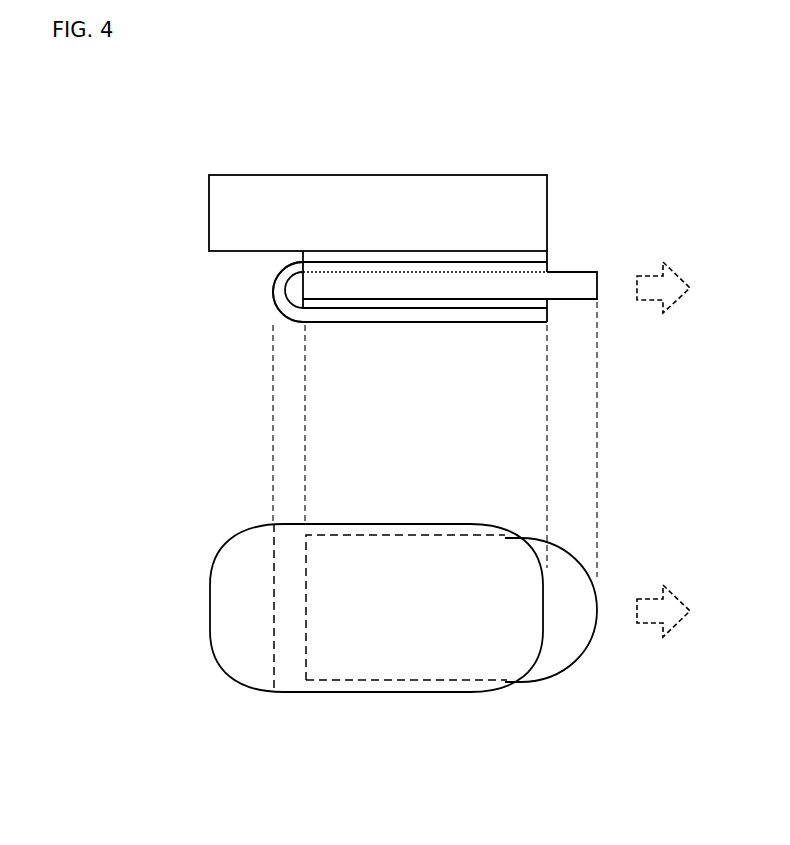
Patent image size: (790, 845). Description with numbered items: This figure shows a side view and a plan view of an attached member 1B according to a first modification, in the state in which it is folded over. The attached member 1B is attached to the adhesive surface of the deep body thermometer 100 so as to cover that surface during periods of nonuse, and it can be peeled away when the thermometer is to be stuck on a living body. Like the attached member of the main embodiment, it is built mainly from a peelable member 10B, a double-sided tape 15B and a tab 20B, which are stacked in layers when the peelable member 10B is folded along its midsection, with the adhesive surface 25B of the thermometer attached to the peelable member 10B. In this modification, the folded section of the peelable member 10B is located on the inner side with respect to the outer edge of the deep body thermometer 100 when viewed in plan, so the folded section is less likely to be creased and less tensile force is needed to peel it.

The deep body thermometer 100 is at (390, 187).
The attached member 1B is at (240, 298).
The peelable member 10B is at (341, 321).
The inner layer 25B is at (385, 263).
The intermediate layer 15B is at (437, 305).
The sliding member 20B is at (507, 285).